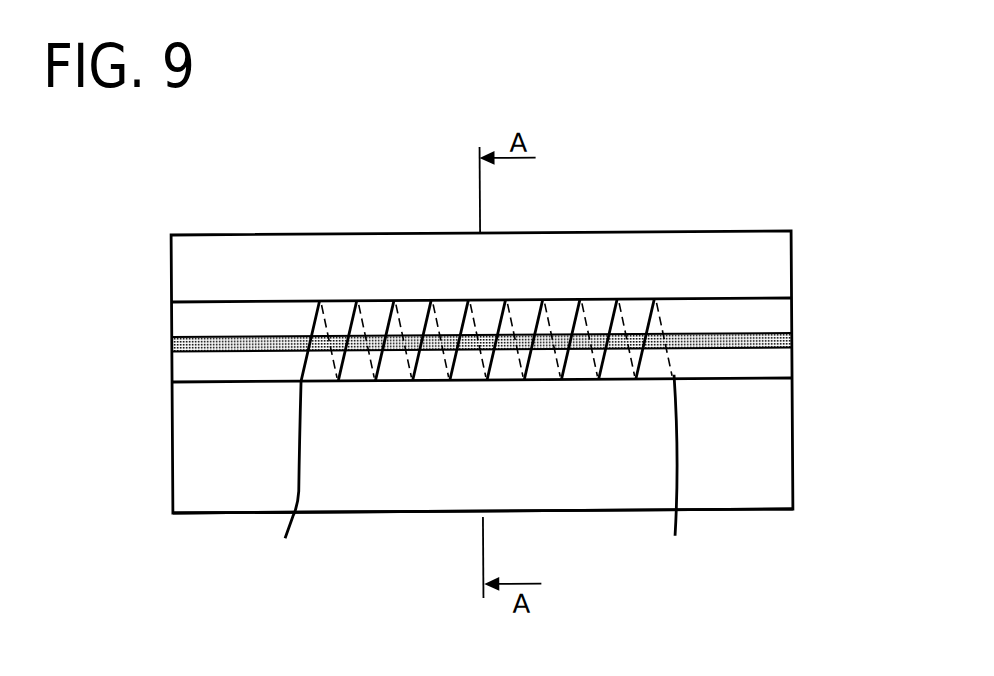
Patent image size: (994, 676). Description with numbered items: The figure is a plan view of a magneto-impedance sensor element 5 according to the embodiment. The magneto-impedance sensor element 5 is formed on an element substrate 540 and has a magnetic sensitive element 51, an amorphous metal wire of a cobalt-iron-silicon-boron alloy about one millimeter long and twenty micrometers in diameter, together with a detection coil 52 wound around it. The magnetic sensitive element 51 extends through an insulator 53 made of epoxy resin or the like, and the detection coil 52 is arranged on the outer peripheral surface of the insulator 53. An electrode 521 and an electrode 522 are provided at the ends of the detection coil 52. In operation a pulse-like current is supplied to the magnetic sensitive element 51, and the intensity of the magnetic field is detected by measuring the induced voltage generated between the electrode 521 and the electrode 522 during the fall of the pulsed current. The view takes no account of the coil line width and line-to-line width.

The magneto-impedance sensor element 5 is at (652, 200).
The magnetic sensitive element 51 is at (742, 338).
The detection coil 52 is at (388, 328).
The insulator 53 is at (760, 366).
The element substrate 540 is at (190, 483).
The electrode 521 is at (296, 520).
The electrode 522 is at (680, 517).